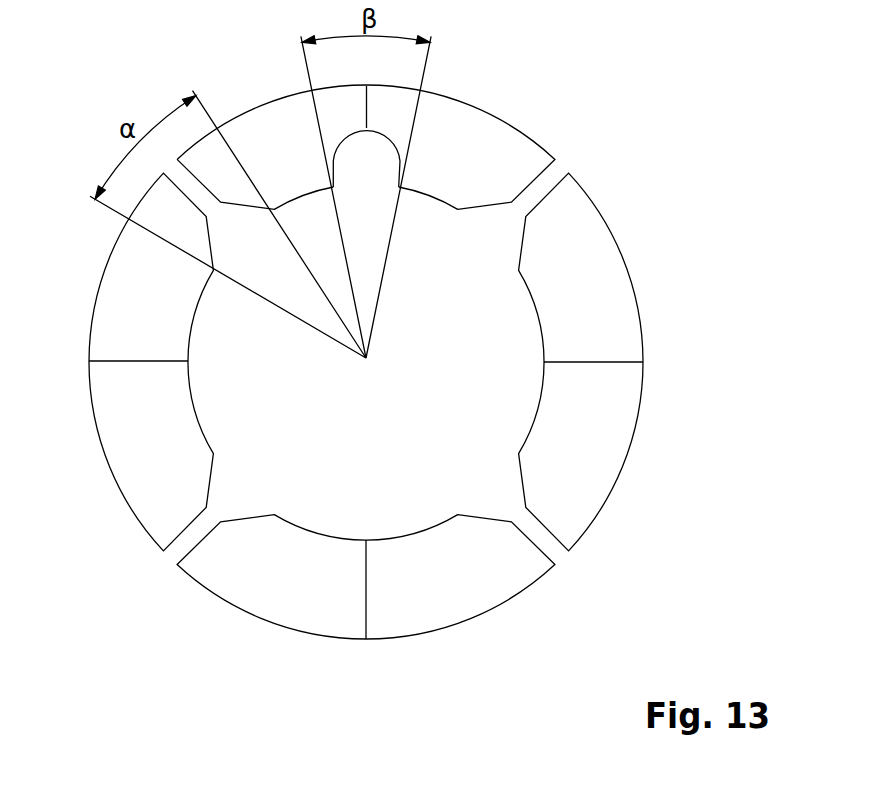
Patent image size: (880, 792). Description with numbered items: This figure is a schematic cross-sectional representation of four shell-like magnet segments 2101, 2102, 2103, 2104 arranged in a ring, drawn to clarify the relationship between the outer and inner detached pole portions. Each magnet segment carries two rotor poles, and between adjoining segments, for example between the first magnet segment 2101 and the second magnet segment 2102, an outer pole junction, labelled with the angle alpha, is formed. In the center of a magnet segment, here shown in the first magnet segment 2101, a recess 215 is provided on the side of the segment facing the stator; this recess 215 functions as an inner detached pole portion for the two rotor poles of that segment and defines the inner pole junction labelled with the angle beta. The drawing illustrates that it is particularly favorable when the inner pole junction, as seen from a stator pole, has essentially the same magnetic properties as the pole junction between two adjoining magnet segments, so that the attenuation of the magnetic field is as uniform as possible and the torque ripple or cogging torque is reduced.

The magnet segment 2101 is at (463, 137).
The magnet segment 2102 is at (607, 282).
The magnet segment 2103 is at (437, 603).
The magnet segment 2104 is at (130, 445).
The recess 215 is at (375, 170).